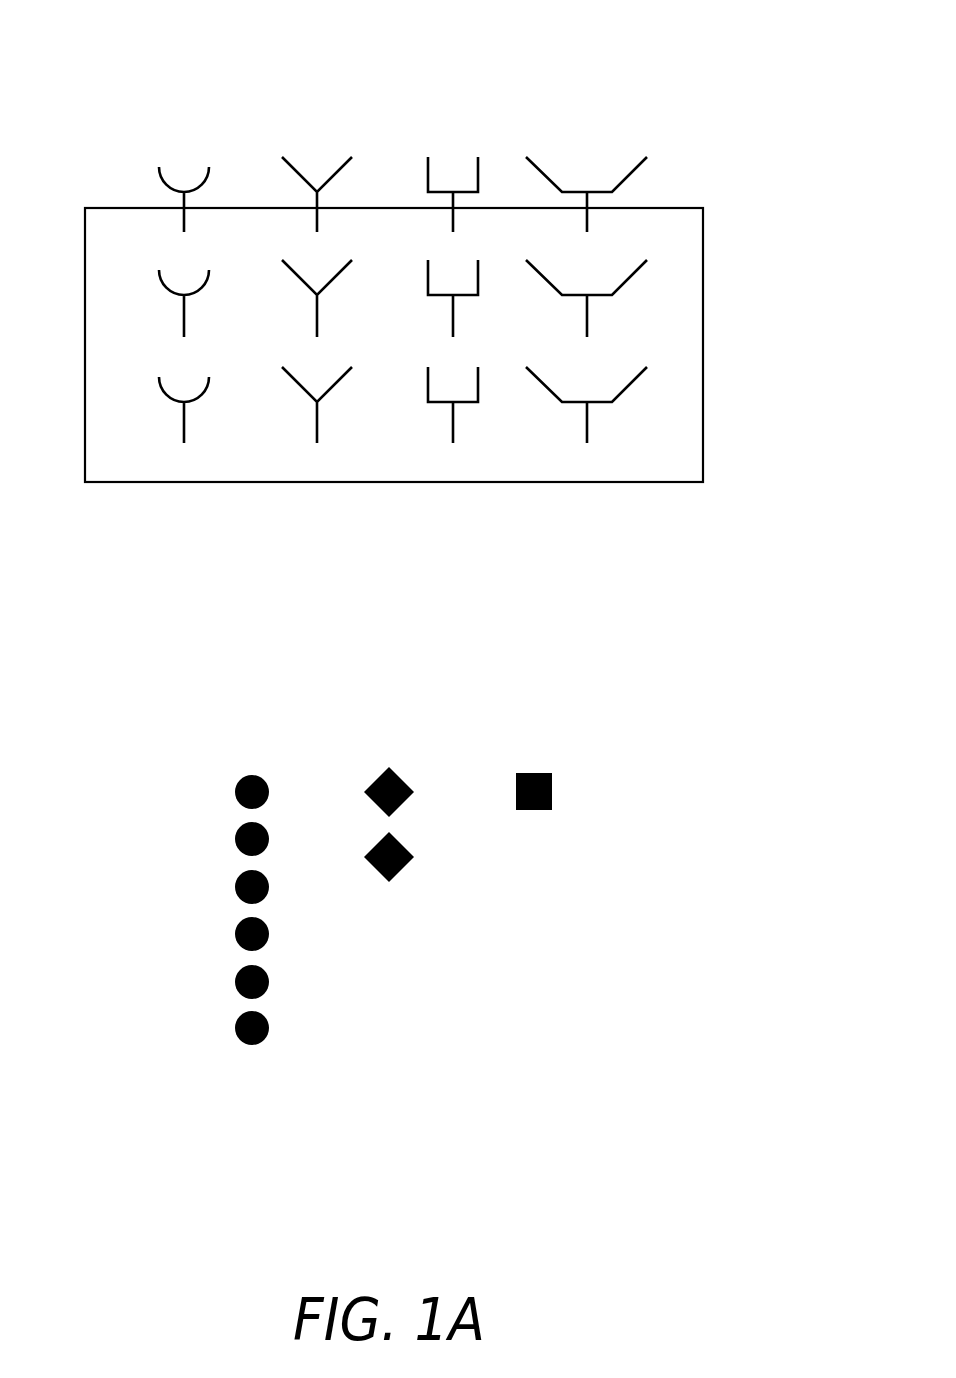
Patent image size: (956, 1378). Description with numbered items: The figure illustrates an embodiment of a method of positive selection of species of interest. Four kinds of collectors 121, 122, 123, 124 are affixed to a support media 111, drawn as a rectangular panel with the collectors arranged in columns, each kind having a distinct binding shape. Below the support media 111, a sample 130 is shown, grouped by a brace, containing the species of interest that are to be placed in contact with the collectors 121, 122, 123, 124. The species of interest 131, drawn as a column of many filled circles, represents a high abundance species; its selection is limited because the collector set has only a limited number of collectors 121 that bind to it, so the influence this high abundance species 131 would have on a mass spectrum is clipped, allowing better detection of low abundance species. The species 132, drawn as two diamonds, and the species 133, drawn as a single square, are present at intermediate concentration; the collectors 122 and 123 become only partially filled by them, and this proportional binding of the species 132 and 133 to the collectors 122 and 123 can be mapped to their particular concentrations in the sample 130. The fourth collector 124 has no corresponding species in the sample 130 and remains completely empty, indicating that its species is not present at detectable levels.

The support media 111 is at (202, 528).
The collector 121 is at (160, 172).
The collector 122 is at (337, 175).
The collector 123 is at (478, 165).
The collector 124 is at (582, 142).
The sample 130 is at (483, 990).
The species of interest 131 is at (248, 1088).
The species 132 is at (393, 957).
The species 133 is at (535, 865).